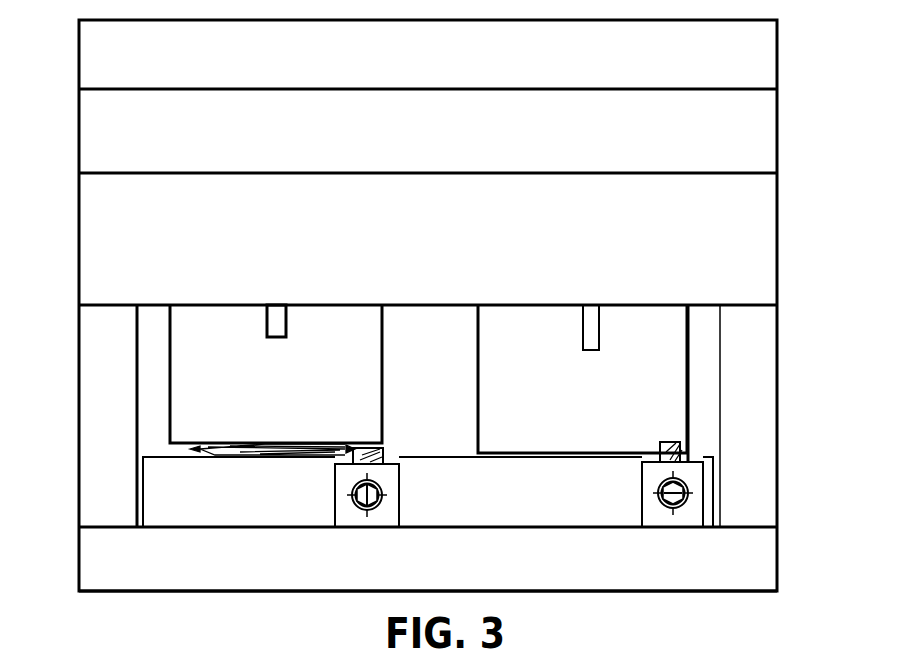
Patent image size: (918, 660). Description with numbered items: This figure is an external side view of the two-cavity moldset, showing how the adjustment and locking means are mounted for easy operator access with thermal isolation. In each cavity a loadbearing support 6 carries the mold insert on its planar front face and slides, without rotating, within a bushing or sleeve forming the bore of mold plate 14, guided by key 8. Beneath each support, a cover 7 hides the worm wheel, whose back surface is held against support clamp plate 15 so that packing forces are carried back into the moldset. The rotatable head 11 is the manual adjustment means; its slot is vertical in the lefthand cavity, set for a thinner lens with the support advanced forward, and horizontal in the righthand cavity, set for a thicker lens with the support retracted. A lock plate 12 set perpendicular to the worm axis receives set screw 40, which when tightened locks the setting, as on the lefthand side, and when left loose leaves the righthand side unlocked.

The loadbearing support 6 is at (238, 392).
The cover 7 is at (155, 497).
The key 8 is at (274, 322).
The rotatable head 11 is at (680, 489).
The lock plate 12 is at (662, 518).
The mold plate 14 is at (750, 258).
The support clamp plate 15 is at (745, 550).
The set screw 40 is at (680, 440).